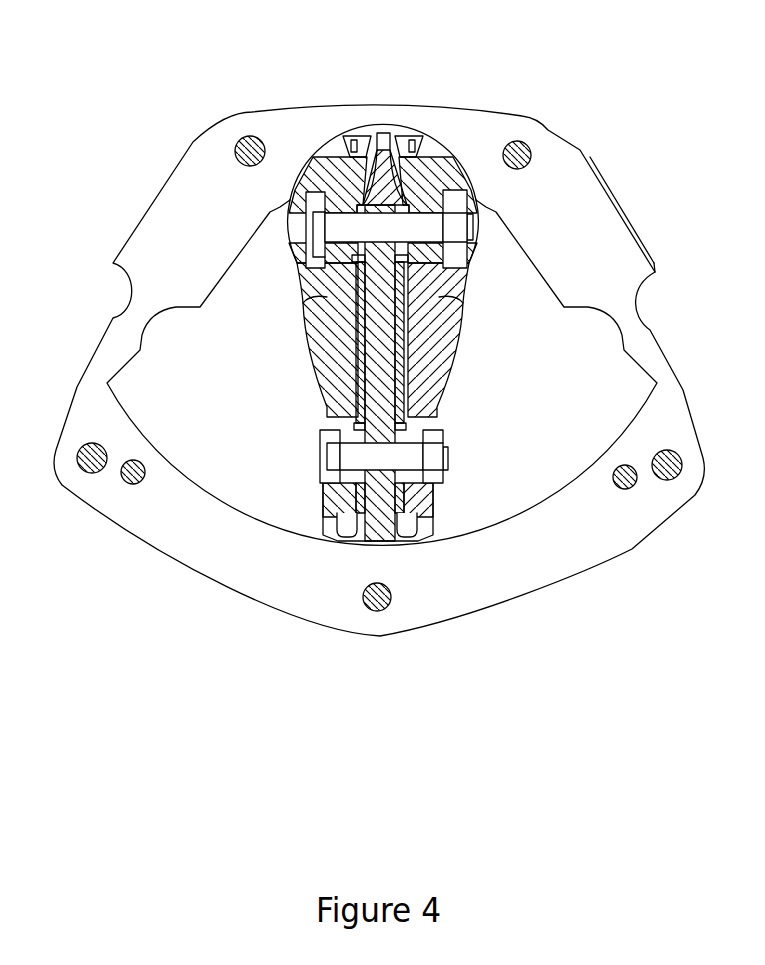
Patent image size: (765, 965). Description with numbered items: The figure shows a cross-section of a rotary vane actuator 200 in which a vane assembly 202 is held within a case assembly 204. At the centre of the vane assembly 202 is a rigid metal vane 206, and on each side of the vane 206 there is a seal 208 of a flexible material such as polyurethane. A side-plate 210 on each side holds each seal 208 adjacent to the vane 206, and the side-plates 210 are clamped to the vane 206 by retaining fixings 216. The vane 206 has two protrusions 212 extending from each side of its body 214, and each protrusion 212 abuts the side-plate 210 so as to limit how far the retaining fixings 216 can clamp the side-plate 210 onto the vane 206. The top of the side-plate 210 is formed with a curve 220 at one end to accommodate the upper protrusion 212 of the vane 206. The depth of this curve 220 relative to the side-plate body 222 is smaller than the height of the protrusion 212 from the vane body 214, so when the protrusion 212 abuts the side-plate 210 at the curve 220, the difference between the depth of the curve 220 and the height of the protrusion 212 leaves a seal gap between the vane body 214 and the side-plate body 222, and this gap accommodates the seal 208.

The actuator 200 is at (369, 420).
The vane assembly 202 is at (330, 527).
The case assembly 204 is at (462, 570).
The vane 206 is at (392, 302).
The seal 208 is at (358, 355).
The side-plate 210 is at (327, 387).
The protrusion 212 is at (320, 284).
The body 214 is at (382, 377).
The retaining fixings 216 is at (340, 232).
The curve 220 is at (463, 215).
The side-plate body 222 is at (346, 170).